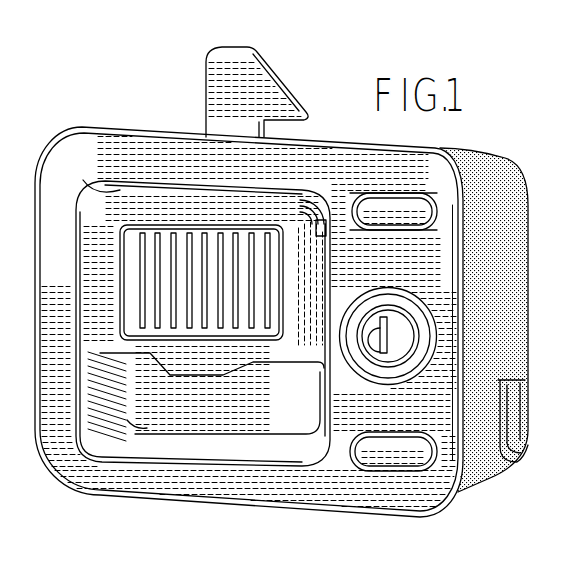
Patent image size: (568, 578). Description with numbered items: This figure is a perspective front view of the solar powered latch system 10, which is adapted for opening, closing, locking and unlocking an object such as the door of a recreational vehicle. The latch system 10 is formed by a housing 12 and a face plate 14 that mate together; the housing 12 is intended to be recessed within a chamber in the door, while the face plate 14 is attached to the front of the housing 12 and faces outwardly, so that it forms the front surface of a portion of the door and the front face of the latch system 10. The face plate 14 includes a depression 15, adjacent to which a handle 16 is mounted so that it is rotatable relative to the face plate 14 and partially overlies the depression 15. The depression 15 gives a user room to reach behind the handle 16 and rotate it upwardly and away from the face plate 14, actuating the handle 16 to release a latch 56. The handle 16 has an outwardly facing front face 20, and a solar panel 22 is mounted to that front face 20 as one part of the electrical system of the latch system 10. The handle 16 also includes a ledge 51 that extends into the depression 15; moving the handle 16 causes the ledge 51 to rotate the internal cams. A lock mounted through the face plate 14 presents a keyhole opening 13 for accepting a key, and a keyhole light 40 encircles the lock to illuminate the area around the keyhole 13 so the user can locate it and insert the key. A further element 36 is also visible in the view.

The solar powered latch system 10 is at (106, 118).
The housing 12 is at (489, 181).
The keyhole opening 13 is at (404, 340).
The face plate 14 is at (410, 497).
The depression 15 is at (131, 444).
The handle 16 is at (105, 322).
The front face 20 is at (116, 348).
The solar panel 22 is at (140, 228).
The clip 36 is at (533, 421).
The keyhole light 40 is at (382, 387).
The ledge 51 is at (176, 218).
The latch 56 is at (281, 84).